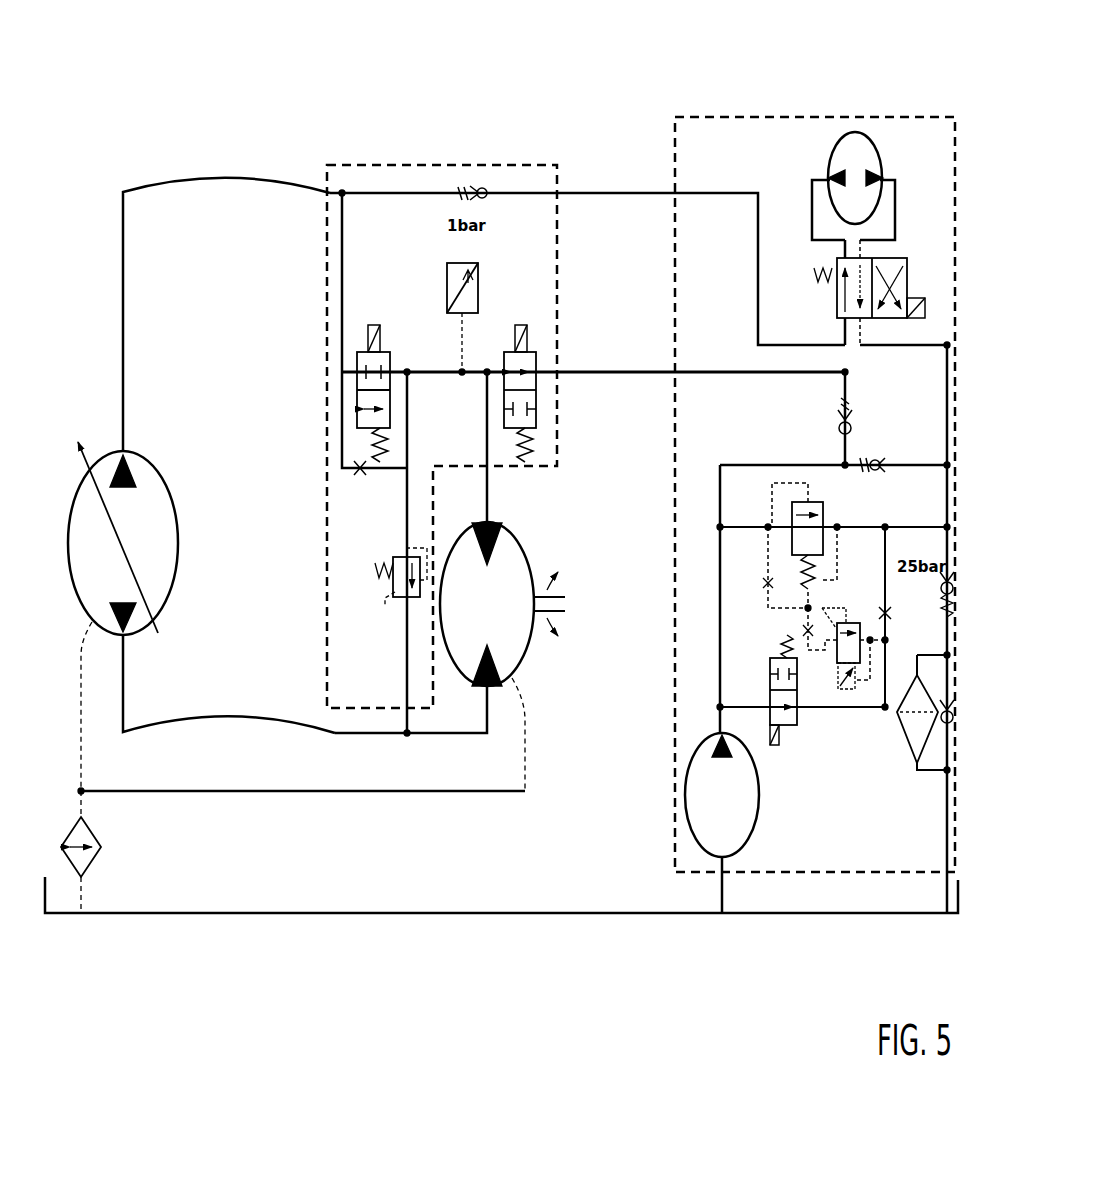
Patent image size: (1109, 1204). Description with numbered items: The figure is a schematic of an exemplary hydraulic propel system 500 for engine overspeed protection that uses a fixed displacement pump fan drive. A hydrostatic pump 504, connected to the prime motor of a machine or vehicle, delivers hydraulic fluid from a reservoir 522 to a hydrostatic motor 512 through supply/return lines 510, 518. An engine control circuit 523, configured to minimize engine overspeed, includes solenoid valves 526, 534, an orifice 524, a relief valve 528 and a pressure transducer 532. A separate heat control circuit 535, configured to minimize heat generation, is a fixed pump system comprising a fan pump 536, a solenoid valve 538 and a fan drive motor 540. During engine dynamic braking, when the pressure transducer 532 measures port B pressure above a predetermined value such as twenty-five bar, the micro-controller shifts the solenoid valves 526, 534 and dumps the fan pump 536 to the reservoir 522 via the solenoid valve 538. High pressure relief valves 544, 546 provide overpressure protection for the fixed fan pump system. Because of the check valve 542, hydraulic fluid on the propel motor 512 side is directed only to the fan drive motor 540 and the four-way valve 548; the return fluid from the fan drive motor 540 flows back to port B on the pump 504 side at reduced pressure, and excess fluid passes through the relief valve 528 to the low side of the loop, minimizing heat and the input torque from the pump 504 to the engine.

The hydraulic propel system 500 is at (818, 37).
The hydrostatic pump 504 is at (137, 640).
The supply/return line 510 is at (483, 411).
The hydrostatic motor 512 is at (468, 692).
The supply/return line 518 is at (445, 738).
The reservoir 522 is at (440, 920).
The engine control circuit 523 is at (406, 160).
The orifice 524 is at (360, 478).
The solenoid valve 526 is at (389, 343).
The relief valve 528 is at (391, 602).
The pressure transducer 532 is at (484, 289).
The solenoid valve 534 is at (540, 353).
The heat control circuit 535 is at (672, 545).
The fan pump 536 is at (680, 805).
The solenoid valve 538 is at (788, 732).
The fan drive motor 540 is at (880, 138).
The check valve 542 is at (851, 413).
The high pressure relief valve 544 is at (818, 498).
The high pressure relief valve 546 is at (843, 670).
The 4-way valve 548 is at (912, 258).